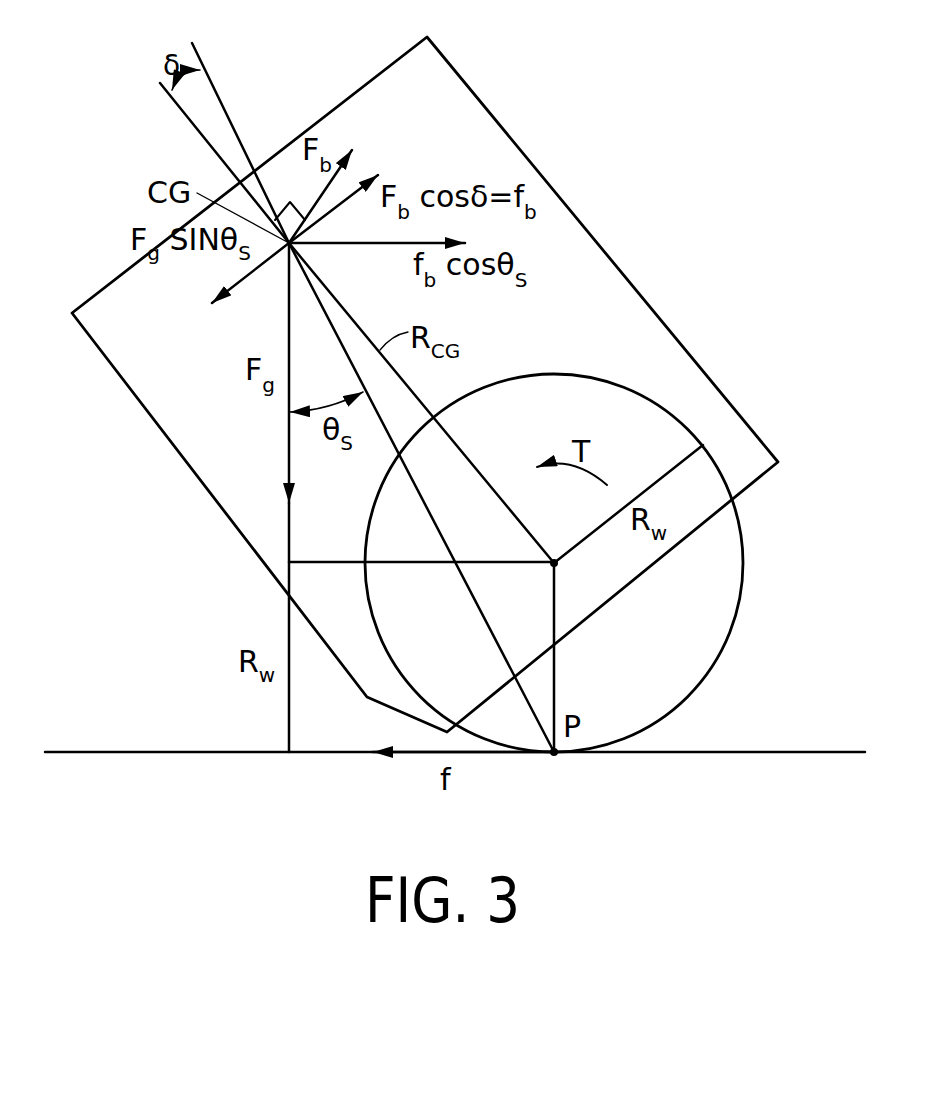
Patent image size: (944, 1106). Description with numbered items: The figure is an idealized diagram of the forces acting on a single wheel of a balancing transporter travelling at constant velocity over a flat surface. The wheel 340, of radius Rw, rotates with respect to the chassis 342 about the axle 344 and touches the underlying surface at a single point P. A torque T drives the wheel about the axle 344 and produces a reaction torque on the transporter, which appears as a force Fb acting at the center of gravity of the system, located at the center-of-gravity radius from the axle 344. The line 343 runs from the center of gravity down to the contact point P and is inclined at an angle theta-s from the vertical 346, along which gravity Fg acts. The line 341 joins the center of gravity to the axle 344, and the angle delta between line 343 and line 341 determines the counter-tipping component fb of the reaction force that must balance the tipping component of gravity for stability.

The wheel 340 is at (715, 672).
The line 341 is at (182, 115).
The chassis 342 is at (110, 367).
The line 343 is at (217, 90).
The axle 344 is at (558, 567).
The vertical 346 is at (288, 532).